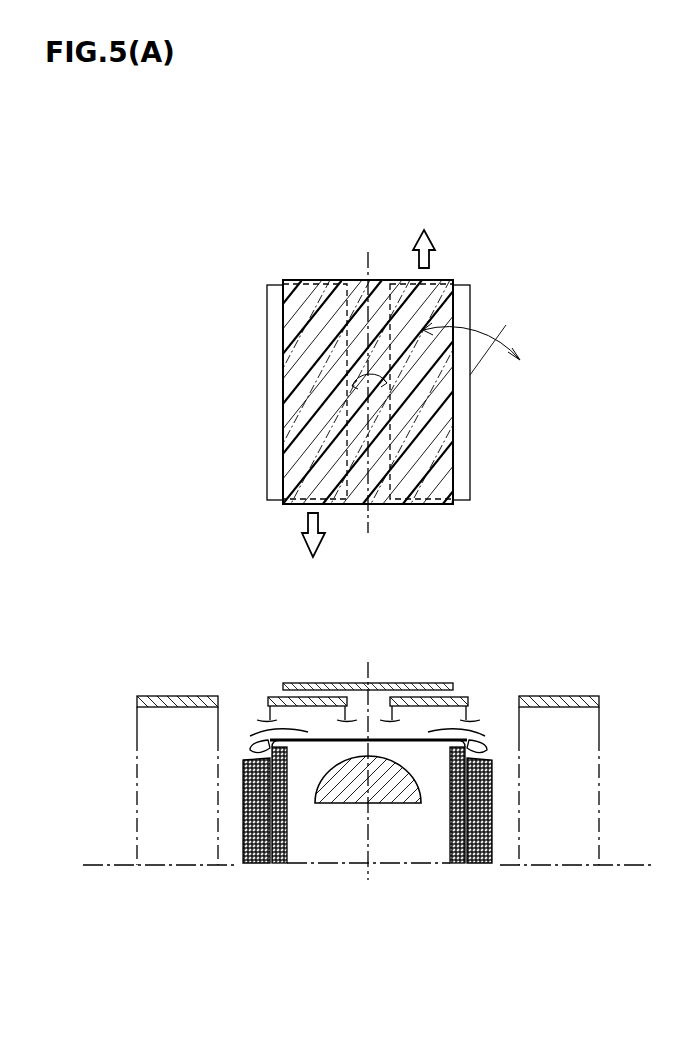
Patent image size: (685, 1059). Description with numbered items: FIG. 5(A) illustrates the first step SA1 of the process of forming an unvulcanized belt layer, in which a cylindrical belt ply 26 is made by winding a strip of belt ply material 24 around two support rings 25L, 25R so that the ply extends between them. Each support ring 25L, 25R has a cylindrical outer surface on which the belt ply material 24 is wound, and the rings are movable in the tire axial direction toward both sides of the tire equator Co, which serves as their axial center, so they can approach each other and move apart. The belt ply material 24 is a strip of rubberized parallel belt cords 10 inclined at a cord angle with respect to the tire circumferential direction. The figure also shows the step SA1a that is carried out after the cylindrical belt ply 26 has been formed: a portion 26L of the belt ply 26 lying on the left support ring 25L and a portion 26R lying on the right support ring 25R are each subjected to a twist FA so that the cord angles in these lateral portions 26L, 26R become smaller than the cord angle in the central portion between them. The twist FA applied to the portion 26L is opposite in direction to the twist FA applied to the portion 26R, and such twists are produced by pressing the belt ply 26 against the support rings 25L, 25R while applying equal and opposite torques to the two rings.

The belt cords 10 is at (298, 383).
The belt ply material 24 is at (283, 317).
The cylindrical belt ply 26 is at (368, 709).
The support ring 25L is at (267, 448).
The support ring 25R is at (470, 448).
The portion of the belt ply 26L is at (347, 273).
The portion of the belt ply 26R is at (453, 510).
The twist FA is at (431, 262).
The step SA1a is at (460, 213).
The first step SA1 is at (457, 660).
The tire equator Co is at (367, 759).